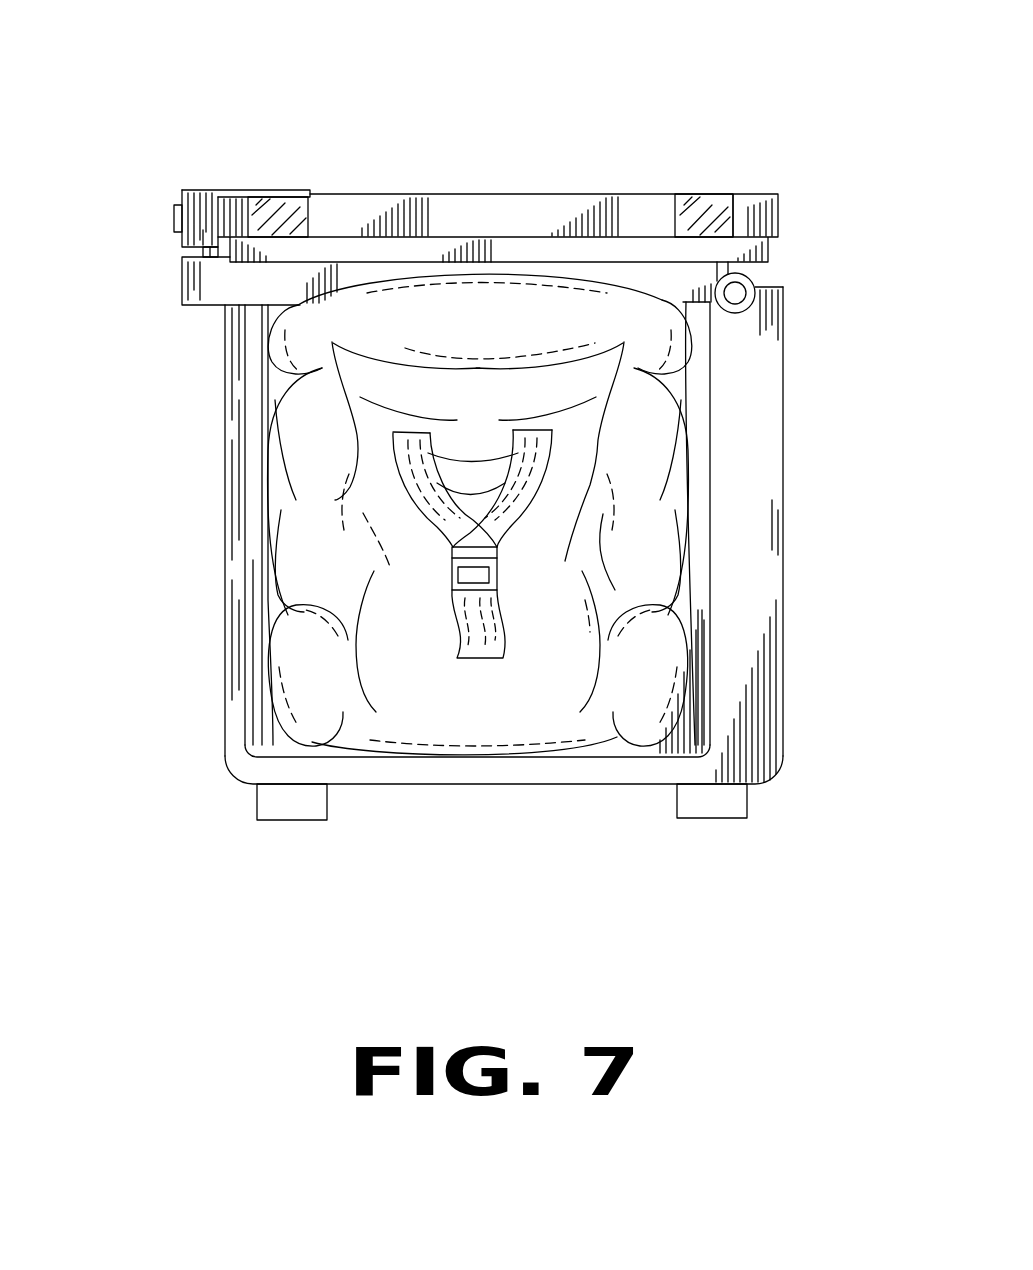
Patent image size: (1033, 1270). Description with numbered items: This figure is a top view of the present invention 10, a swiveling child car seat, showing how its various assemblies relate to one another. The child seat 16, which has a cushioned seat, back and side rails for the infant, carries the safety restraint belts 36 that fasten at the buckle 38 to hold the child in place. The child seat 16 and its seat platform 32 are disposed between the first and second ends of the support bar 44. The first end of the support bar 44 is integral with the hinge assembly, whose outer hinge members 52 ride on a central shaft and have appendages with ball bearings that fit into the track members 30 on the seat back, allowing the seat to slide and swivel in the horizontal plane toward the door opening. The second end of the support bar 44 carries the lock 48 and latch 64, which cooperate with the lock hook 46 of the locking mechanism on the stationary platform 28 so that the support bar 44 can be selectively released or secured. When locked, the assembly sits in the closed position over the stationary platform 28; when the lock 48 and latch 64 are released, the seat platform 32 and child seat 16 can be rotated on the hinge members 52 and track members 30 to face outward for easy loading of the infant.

The present invention 10 is at (770, 133).
The child seat 16 is at (307, 710).
The stationary platform 28 is at (458, 785).
The track members 30 is at (657, 247).
The seat platform 32 is at (245, 632).
The safety restraint belts 36 is at (405, 468).
The buckle 38 is at (453, 573).
The support bar 44 is at (227, 290).
The lock hook 46 is at (207, 257).
The lock 48 is at (257, 190).
The outer hinge members 52 is at (738, 278).
The latch 64 is at (174, 220).